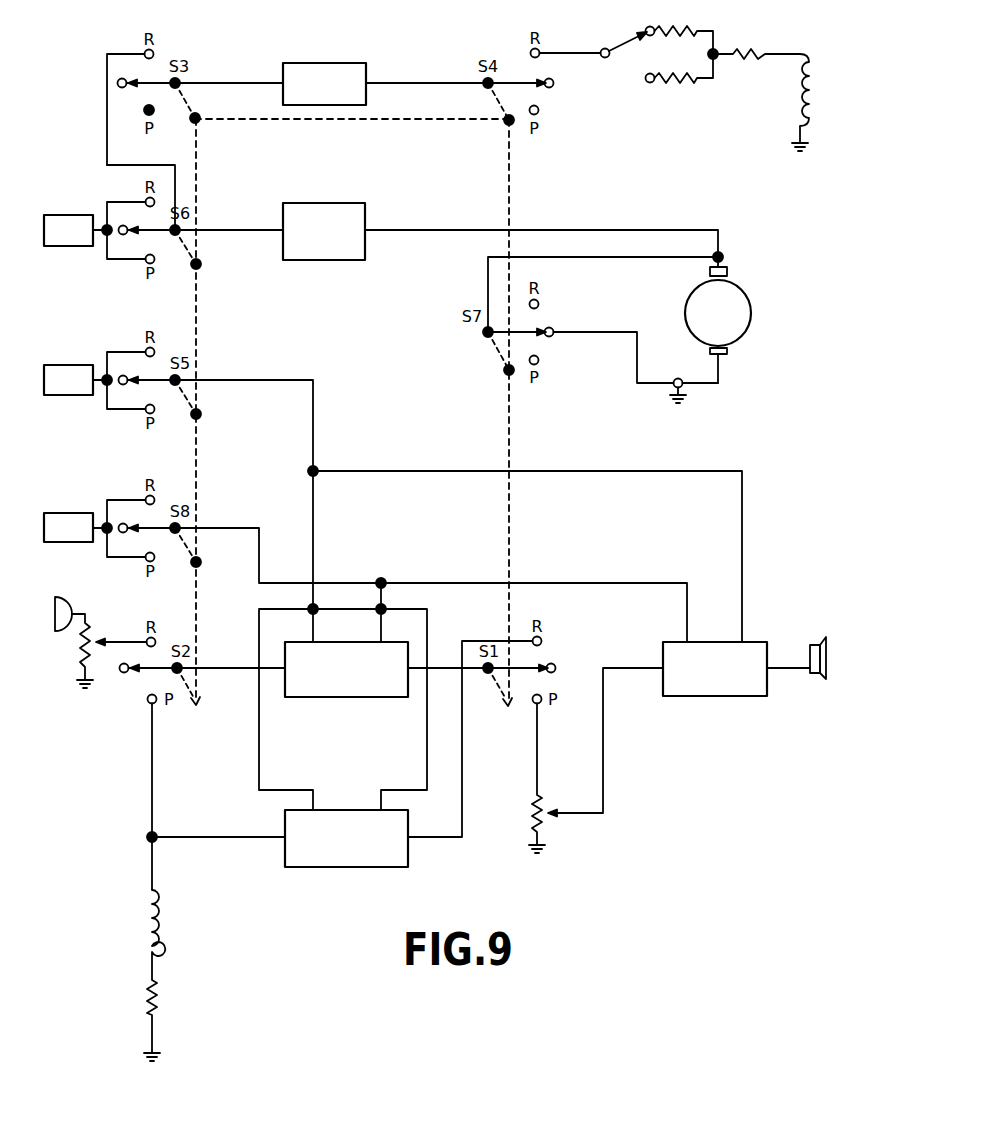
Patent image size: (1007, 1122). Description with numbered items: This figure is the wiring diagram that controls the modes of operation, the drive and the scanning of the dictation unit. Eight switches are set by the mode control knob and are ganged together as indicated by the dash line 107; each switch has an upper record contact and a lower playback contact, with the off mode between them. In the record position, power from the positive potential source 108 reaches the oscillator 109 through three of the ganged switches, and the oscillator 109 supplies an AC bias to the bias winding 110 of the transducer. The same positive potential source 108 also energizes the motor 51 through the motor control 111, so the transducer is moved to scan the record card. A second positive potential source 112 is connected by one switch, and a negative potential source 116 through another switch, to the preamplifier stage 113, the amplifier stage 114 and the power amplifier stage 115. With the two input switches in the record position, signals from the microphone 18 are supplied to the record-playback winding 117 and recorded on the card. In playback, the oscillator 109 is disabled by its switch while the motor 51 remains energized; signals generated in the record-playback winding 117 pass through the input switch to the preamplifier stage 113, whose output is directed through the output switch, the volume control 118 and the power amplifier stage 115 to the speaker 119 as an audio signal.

The microphone 18 is at (67, 609).
The motor 51 is at (752, 318).
The dash line 107 is at (513, 176).
The positive potential source 108 is at (55, 214).
The oscillator 109 is at (343, 63).
The bias winding 110 is at (812, 72).
The motor control 111 is at (327, 203).
The second positive potential source 112 is at (55, 364).
The preamplifier stage 113 is at (325, 697).
The amplifier stage 114 is at (325, 867).
The power amplifier stage 115 is at (702, 696).
The negative potential source 116 is at (56, 512).
The record-playback winding 117 is at (143, 917).
The volume control 118 is at (559, 816).
The speaker 119 is at (813, 677).